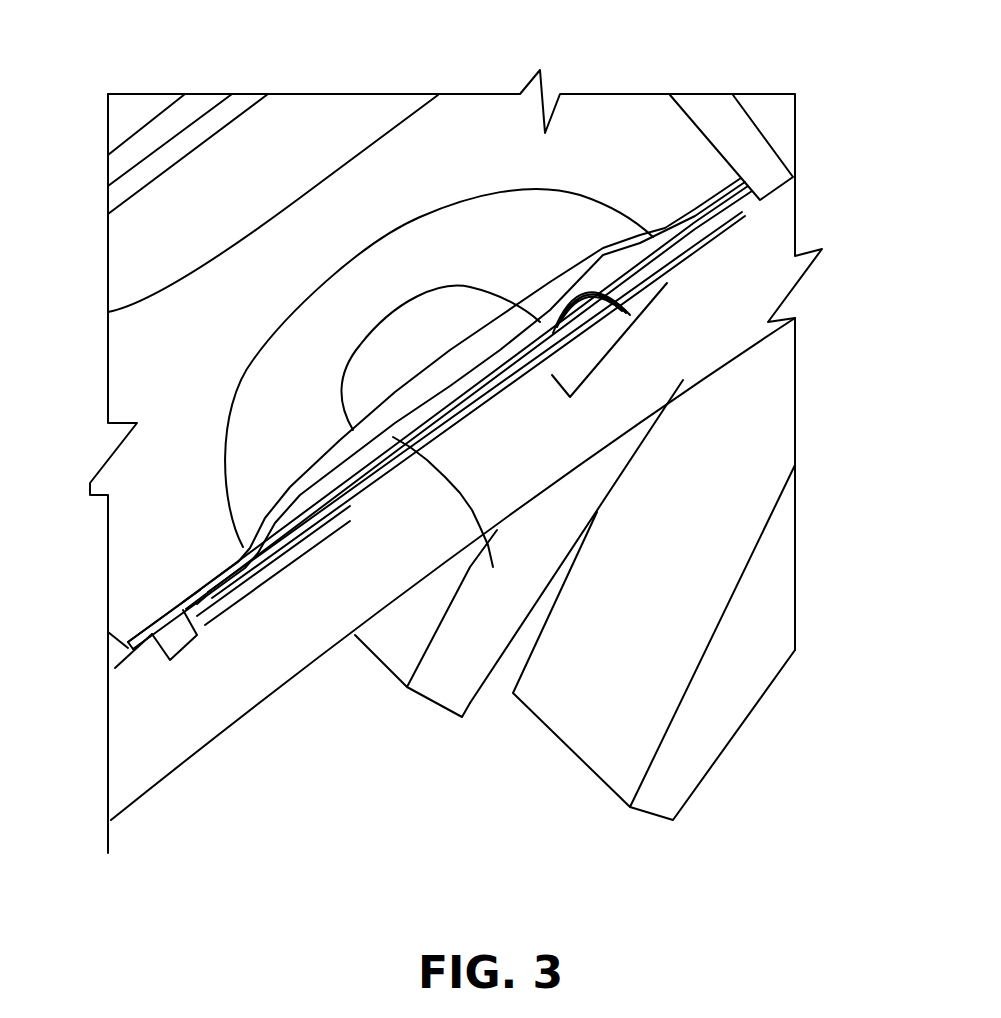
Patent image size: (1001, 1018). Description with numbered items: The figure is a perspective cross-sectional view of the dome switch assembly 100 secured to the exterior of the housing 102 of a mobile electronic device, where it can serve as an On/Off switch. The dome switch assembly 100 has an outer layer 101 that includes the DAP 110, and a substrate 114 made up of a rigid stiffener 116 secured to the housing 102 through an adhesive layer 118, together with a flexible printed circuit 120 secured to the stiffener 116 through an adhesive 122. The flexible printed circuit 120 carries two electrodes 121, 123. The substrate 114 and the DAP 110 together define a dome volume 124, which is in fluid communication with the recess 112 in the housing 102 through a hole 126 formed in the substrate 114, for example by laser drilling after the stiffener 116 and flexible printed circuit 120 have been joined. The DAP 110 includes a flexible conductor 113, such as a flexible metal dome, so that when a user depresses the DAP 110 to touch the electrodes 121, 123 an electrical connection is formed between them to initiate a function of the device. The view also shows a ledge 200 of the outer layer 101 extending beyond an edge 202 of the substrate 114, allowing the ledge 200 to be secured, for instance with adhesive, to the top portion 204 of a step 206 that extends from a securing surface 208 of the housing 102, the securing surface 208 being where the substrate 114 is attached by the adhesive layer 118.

The dome switch assembly 100 is at (683, 183).
The outer layer 101 is at (617, 130).
The housing 102 is at (407, 687).
The DAP 110 is at (318, 537).
The recess 112 is at (587, 373).
The flexible conductor 113 is at (304, 508).
The substrate 114 is at (238, 597).
The stiffener 116 is at (678, 258).
The adhesive layer 118 is at (723, 243).
The flexible printed circuit 120 is at (290, 520).
The electrode 121 is at (453, 397).
The adhesive 122 is at (730, 207).
The electrode 123 is at (337, 483).
The dome volume 124 is at (493, 567).
The hole 126 is at (587, 320).
The ledge 200 is at (130, 632).
The edge 202 is at (190, 640).
The top portion 204 is at (128, 658).
The step 206 is at (158, 647).
The securing surface 208 is at (273, 583).